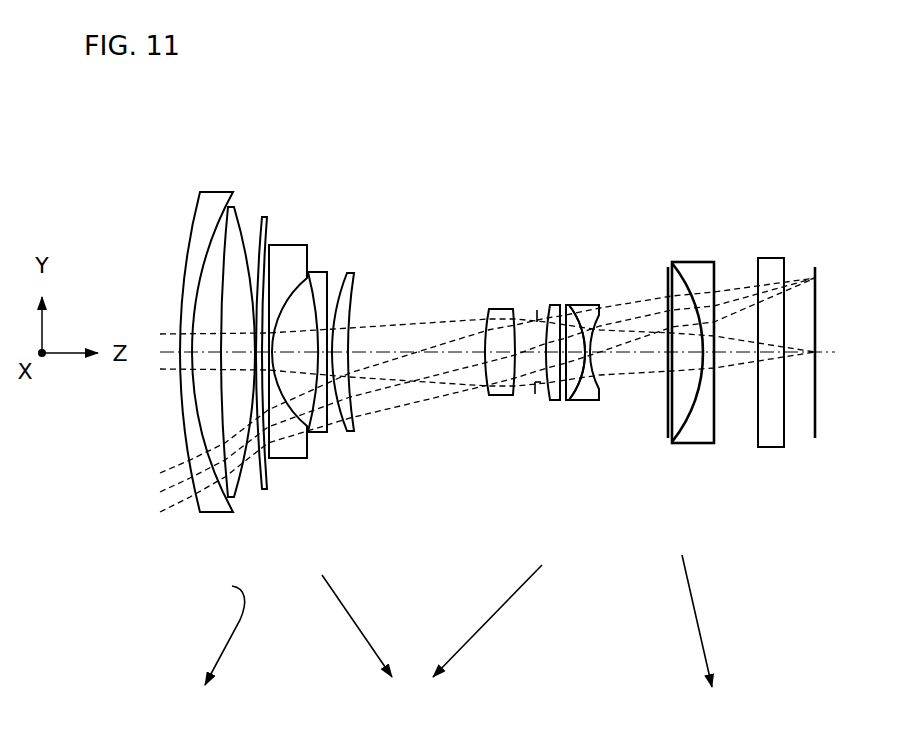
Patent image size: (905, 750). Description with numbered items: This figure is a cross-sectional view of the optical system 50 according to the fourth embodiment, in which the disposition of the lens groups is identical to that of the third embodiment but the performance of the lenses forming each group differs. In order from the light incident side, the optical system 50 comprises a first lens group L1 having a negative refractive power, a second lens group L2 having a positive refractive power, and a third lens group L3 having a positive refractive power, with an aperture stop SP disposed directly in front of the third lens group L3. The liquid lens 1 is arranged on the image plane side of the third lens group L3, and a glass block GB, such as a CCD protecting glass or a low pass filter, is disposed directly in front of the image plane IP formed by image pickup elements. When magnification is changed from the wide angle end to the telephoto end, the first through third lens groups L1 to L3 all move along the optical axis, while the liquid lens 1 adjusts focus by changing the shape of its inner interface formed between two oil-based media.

The optical system 50 is at (659, 195).
The first lens group L1 is at (192, 523).
The second lens group L2 is at (282, 495).
The aperture stop SP is at (537, 317).
The third lens group L3 is at (492, 415).
The liquid lens 1 is at (672, 465).
The glass block GB is at (768, 436).
The image plane IP is at (808, 420).